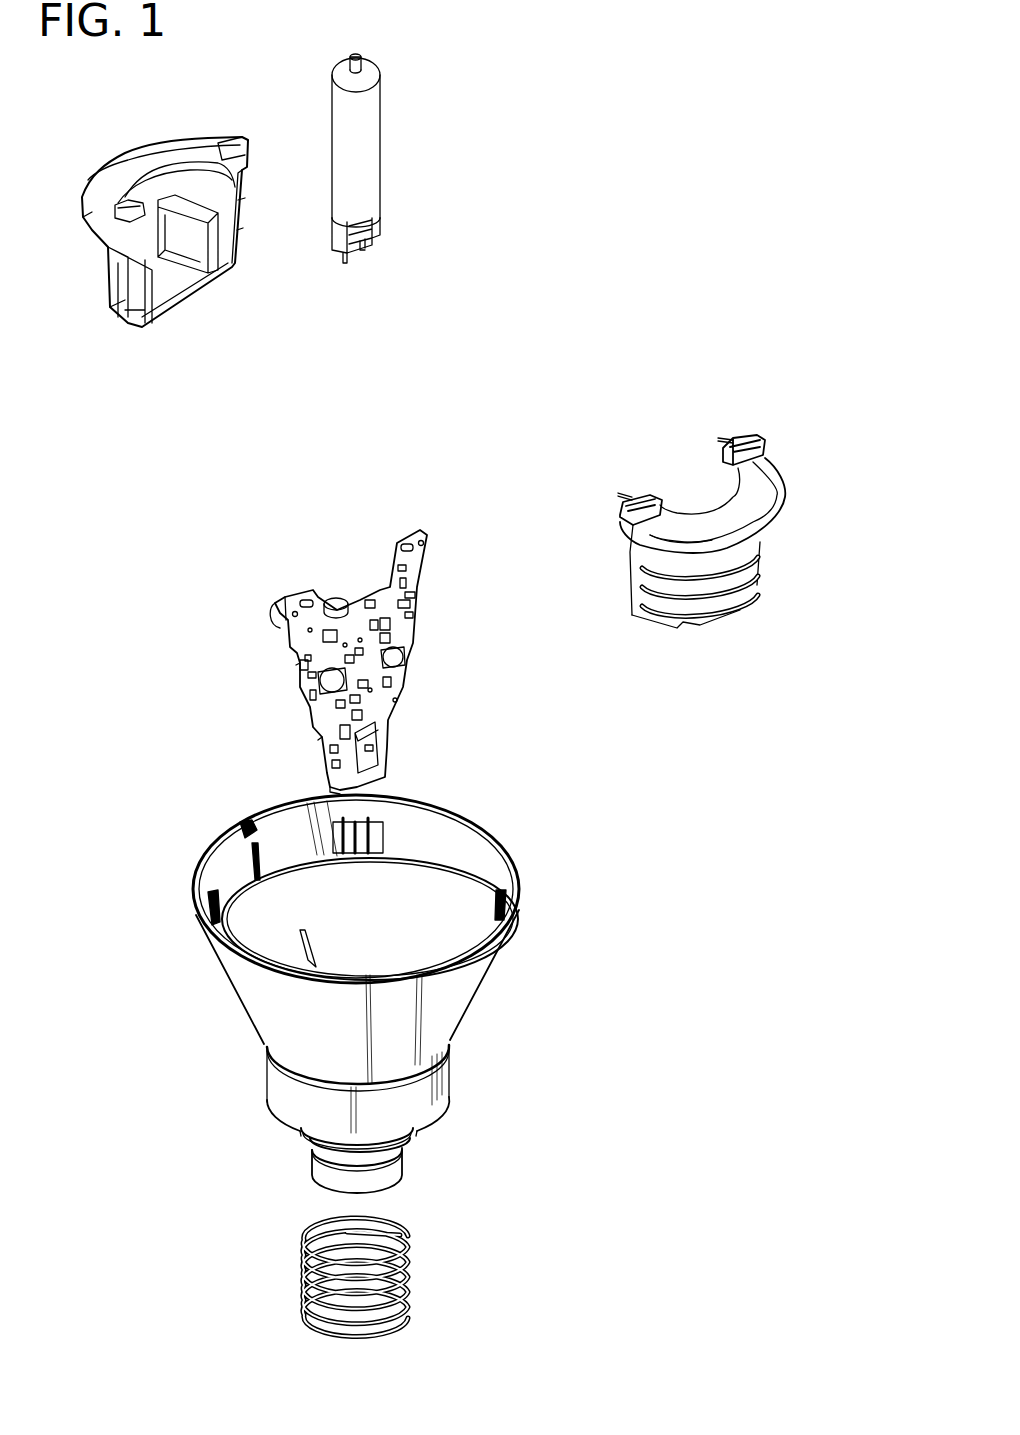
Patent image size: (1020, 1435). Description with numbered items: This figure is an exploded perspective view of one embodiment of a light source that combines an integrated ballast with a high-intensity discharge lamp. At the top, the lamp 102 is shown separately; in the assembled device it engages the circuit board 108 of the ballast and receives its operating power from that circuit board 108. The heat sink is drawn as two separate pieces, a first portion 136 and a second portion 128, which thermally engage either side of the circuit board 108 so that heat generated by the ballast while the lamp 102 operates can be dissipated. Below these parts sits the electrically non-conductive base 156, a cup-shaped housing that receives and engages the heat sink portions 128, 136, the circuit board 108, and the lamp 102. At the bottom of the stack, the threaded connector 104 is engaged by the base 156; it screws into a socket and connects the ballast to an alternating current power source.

The lamp 102 is at (370, 157).
The threaded connector 104 is at (413, 1243).
The circuit board 108 is at (418, 557).
The second portion of heat sink 128 is at (765, 480).
The first portion of heat sink 136 is at (115, 178).
The electrically non-conductive base 156 is at (498, 827).